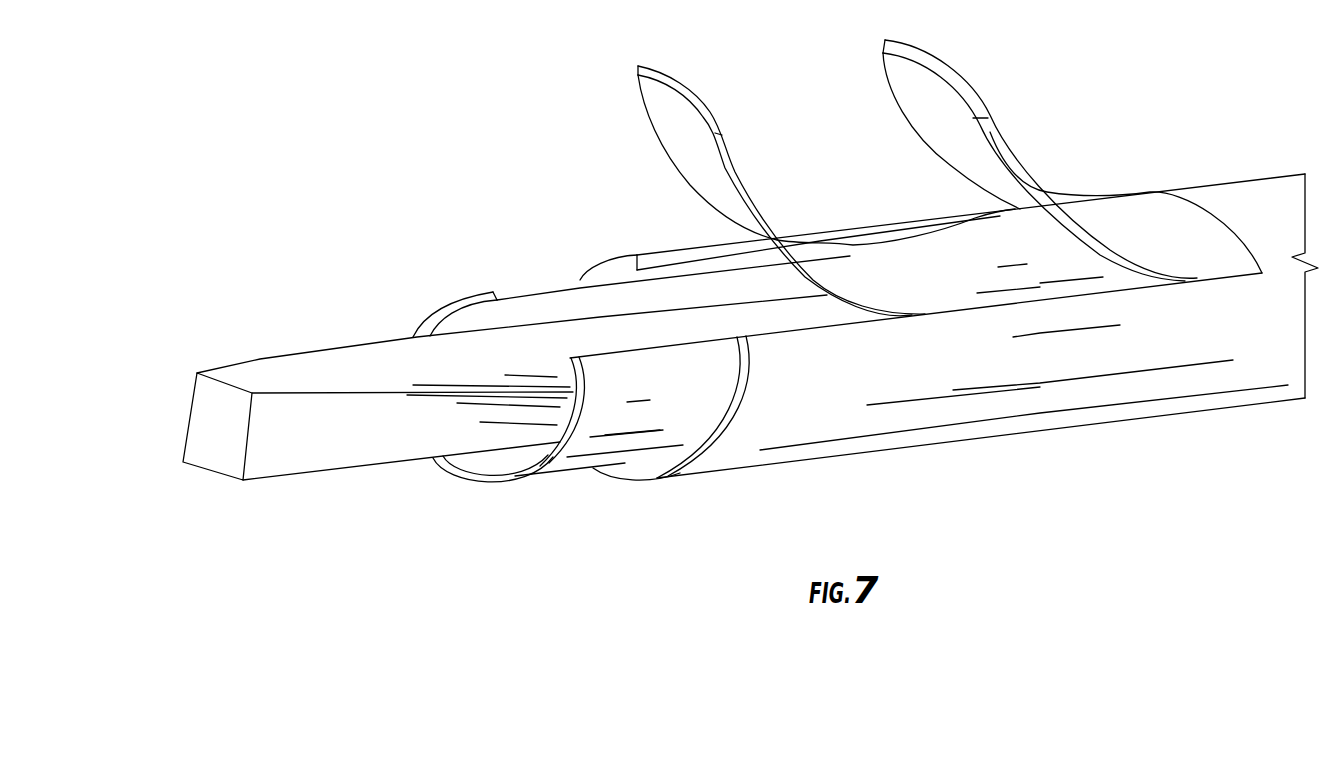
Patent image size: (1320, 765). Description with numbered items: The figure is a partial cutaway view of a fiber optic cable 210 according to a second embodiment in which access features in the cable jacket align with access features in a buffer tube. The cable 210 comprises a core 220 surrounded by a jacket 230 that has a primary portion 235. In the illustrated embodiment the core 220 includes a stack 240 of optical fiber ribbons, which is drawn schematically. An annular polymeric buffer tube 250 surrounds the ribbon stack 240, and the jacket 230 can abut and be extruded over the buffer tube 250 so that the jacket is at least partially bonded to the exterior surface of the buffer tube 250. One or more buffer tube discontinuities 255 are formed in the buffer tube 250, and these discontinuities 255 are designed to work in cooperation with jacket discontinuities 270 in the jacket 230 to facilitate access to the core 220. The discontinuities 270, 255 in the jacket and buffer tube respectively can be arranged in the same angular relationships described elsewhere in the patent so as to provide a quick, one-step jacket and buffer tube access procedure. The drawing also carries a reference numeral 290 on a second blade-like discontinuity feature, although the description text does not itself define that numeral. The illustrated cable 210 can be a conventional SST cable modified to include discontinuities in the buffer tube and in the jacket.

The fiber optic cable 210 is at (403, 172).
The core 220 is at (228, 303).
The jacket 230 is at (1122, 465).
The primary portion 235 is at (892, 440).
The stack of optical fiber ribbons 240 is at (295, 455).
The buffer tube 250 is at (562, 463).
The buffer tube discontinuities 255 is at (963, 298).
The jacket discontinuities 270 is at (985, 207).
The second blade 290 is at (950, 60).